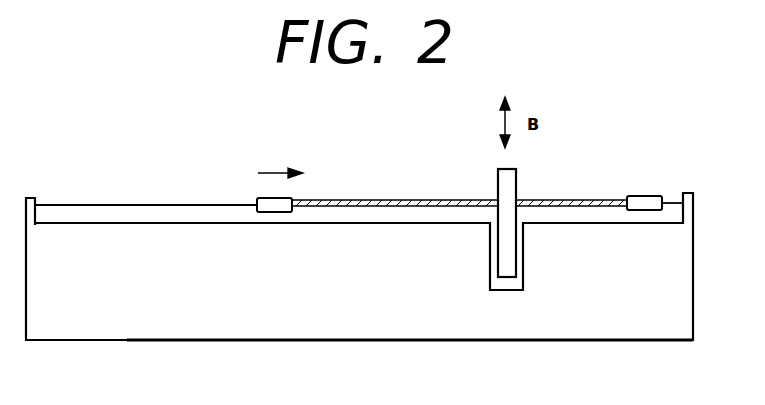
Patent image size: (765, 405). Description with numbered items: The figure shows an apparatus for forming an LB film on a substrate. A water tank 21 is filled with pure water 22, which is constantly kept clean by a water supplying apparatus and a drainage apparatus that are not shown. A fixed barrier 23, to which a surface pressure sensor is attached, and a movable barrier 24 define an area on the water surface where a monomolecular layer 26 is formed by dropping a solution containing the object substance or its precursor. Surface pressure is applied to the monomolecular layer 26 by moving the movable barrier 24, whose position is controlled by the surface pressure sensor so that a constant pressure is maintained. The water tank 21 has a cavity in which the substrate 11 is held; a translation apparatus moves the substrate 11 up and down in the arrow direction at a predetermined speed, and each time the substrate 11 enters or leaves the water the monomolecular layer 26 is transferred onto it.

The substrate 11 is at (497, 185).
The water tank 21 is at (93, 253).
The pure water 22 is at (176, 204).
The fixed barrier 23 is at (645, 196).
The movable barrier 24 is at (262, 198).
The monomolecular layer 26 is at (553, 200).